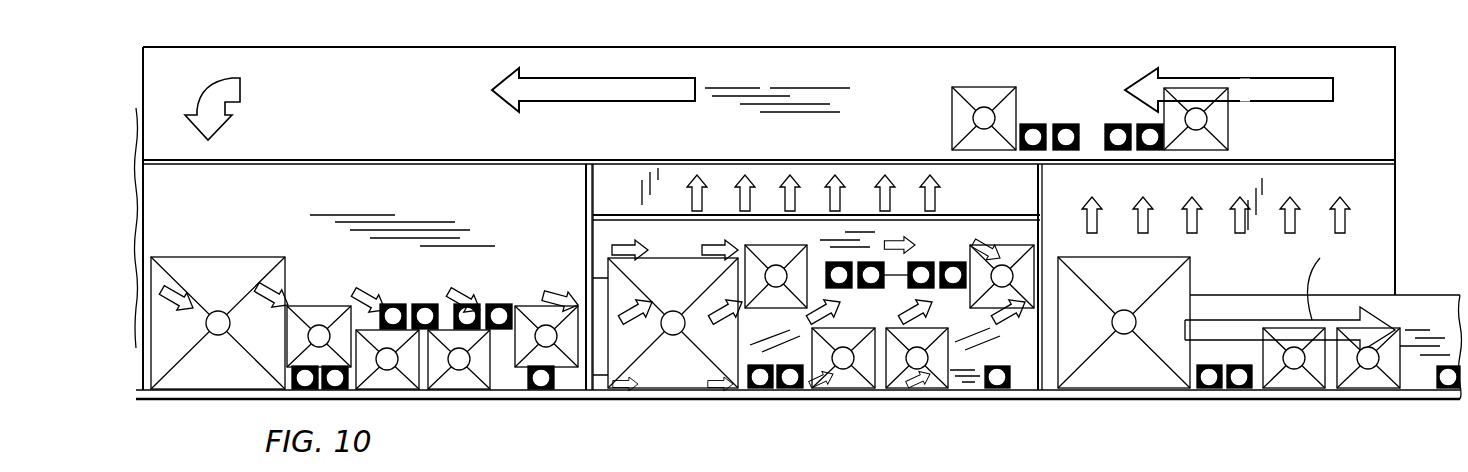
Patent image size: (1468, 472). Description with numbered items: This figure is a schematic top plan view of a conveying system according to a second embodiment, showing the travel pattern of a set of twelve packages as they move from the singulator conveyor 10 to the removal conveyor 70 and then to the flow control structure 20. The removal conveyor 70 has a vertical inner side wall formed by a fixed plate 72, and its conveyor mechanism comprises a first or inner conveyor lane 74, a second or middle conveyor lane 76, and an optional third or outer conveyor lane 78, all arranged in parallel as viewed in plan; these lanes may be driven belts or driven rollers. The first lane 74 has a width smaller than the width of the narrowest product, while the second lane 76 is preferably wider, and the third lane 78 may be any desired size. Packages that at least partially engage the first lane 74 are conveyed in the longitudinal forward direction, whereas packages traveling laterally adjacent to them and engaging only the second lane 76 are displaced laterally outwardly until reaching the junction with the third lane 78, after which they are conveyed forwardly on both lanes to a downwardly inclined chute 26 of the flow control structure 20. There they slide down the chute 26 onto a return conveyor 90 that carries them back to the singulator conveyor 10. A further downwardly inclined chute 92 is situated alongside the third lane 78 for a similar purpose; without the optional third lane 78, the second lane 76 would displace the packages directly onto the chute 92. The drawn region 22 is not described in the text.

The singulator conveyor 10 is at (490, 210).
The flow control structure 20 is at (1246, 269).
The extension conveyor line 22 is at (1425, 315).
The downwardly inclined chute 26 is at (1385, 190).
The removal conveyor 70 is at (816, 279).
The fixed plate 72 is at (600, 391).
The first or inner conveyor lane 74 is at (745, 391).
The second or middle conveyor lane 76 is at (818, 286).
The third or outer conveyor lane 78 is at (894, 246).
The return conveyor 90 is at (290, 75).
The downwardly inclined chute 92 is at (978, 201).